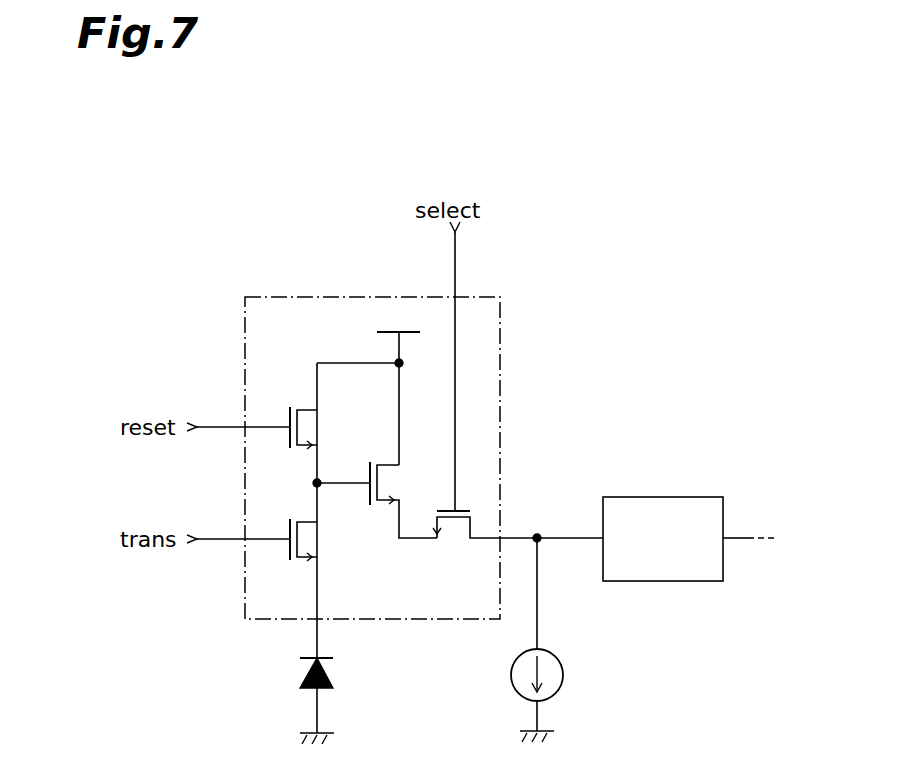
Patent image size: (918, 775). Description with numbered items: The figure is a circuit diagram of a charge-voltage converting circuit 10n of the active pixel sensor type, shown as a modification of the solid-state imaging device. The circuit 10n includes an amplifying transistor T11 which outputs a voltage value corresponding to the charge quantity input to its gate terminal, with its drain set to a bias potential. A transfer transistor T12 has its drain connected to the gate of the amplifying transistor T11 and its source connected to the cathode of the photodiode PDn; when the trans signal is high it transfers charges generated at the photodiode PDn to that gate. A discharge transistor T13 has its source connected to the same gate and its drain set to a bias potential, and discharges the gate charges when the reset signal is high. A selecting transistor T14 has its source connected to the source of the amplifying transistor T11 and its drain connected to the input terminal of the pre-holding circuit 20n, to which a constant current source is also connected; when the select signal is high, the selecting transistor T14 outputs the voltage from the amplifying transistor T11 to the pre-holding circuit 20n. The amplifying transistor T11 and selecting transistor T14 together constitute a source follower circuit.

The charge-voltage converting circuit 10n is at (500, 333).
The pre-holding circuit 20n is at (670, 497).
The photodiode PDn is at (305, 671).
The amplifying transistor T11 is at (377, 500).
The transfer transistor T12 is at (272, 540).
The discharge transistor T13 is at (272, 428).
The selecting transistor T14 is at (518, 401).